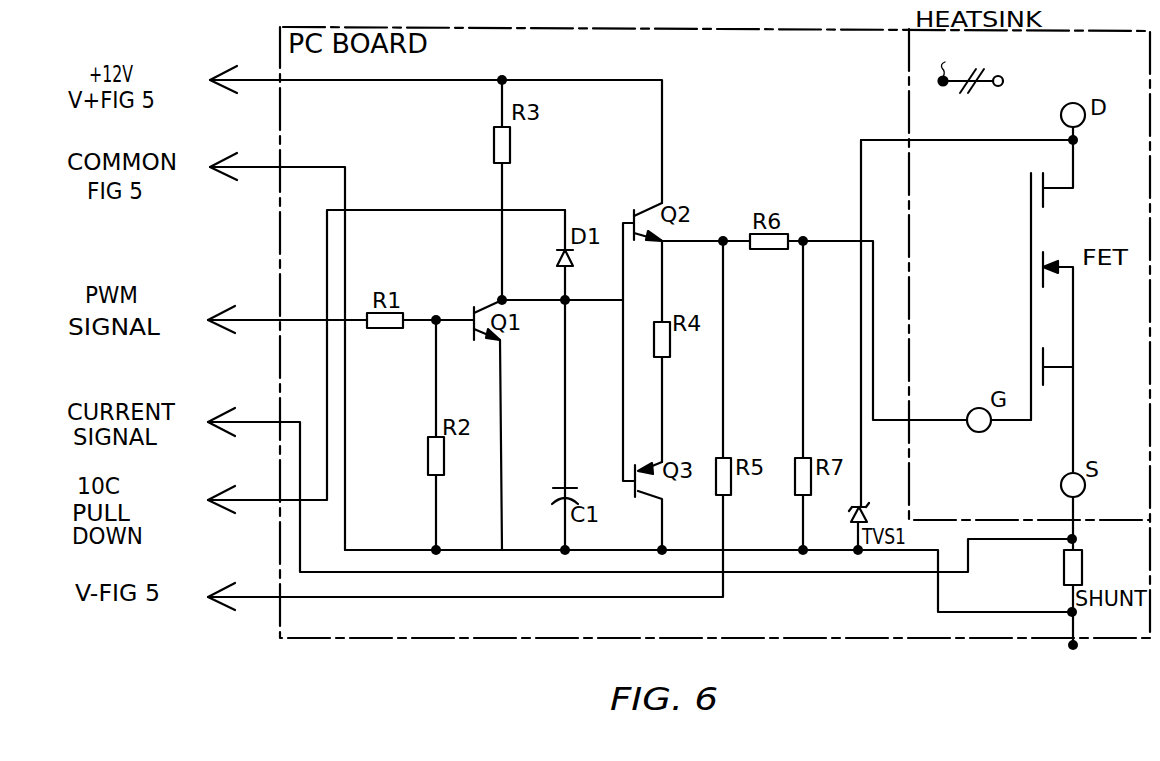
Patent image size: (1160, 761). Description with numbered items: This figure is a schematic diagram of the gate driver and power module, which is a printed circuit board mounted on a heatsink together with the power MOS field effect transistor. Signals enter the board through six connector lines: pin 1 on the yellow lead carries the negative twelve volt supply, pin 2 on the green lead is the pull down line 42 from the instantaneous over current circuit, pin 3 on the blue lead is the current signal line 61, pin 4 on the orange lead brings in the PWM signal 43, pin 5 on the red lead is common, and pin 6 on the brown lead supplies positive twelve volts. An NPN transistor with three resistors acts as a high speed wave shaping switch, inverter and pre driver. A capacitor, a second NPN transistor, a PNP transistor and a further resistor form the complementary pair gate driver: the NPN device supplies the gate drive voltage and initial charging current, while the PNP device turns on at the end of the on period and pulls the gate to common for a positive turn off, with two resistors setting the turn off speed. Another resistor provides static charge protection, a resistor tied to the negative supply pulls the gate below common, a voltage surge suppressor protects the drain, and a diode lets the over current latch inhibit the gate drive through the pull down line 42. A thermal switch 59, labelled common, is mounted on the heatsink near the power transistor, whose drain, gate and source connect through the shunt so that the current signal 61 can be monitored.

The connector pin 1 (YEL, V- FIG 5) 1 is at (457, 425).
The connector pin 2 (GRN, pull down) 2 is at (253, 526).
The connector pin 3 (BL, current signal) 3 is at (251, 450).
The connector pin 4 (ORG, PWM signal) 4 is at (253, 348).
The connector pin 5 (RED, common) 5 is at (267, 347).
The connector pin 6 (BRN, +12V) 6 is at (235, 75).
The pull down line 42 is at (377, 379).
The PWM signal line 43 is at (277, 328).
The thermal switch TSW1-4 59 is at (998, 72).
The current signal line 61 is at (630, 485).